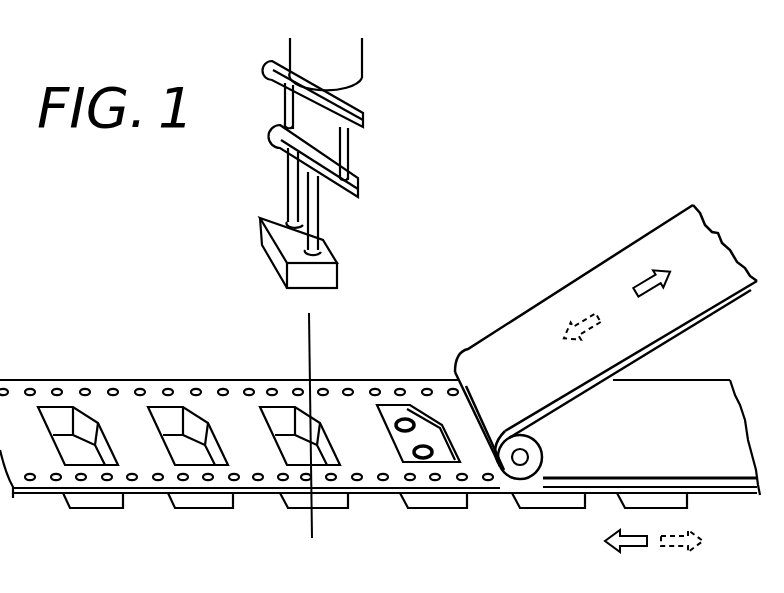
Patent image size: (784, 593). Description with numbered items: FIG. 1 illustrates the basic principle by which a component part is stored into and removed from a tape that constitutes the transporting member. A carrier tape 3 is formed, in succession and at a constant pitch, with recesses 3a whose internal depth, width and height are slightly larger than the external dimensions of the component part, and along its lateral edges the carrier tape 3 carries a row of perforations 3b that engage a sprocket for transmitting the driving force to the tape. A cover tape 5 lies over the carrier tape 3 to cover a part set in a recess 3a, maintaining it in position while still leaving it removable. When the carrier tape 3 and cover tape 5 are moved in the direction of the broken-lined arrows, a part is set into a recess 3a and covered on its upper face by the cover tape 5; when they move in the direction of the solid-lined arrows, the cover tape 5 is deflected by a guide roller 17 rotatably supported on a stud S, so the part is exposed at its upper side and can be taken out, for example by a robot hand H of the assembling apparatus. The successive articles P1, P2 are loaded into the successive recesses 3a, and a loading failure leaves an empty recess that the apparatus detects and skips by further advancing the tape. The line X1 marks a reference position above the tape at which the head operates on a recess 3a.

The carrier tape 3 is at (265, 498).
The recess 3a is at (173, 417).
The perforation 3b is at (112, 387).
The cover tape 5 is at (632, 253).
The guide roller 17 is at (537, 448).
The stud S is at (518, 465).
The robot hand H is at (377, 77).
The article P1 is at (272, 220).
The article P2 is at (413, 405).
The reference line X1 is at (294, 418).